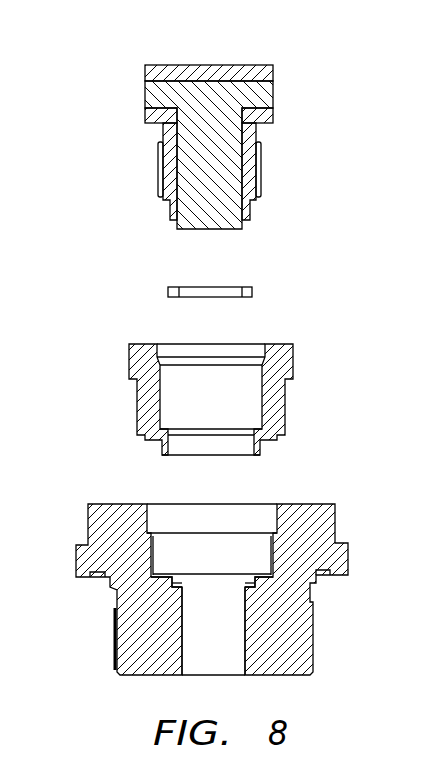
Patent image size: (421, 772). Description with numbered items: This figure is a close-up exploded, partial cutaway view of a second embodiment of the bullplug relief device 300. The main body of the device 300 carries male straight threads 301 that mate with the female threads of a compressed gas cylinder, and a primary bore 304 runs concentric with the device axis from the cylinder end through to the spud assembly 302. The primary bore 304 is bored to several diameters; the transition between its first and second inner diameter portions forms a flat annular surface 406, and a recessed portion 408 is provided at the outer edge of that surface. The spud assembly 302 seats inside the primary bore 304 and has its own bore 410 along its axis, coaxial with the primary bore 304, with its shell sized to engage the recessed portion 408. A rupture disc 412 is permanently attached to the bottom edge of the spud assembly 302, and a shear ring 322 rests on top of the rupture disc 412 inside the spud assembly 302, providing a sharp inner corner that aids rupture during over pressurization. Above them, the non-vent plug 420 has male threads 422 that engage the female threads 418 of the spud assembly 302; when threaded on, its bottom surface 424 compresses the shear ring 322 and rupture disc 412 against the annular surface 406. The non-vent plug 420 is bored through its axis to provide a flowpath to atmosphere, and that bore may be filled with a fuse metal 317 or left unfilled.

The bullplug relief device 300 is at (83, 491).
The male straight threads 301 is at (107, 648).
The spud assembly 302 is at (130, 365).
The primary bore 304 is at (232, 644).
The fuse metal 317 is at (145, 95).
The shear ring 322 is at (218, 286).
The flat annular surface 406 is at (180, 580).
The recessed portion 408 is at (180, 587).
The bore 410 is at (229, 408).
The rupture disc 412 is at (213, 456).
The female threads 418 is at (255, 387).
The non-vent plug 420 is at (307, 63).
The male threads 422 is at (262, 167).
The bottom surface 424 is at (190, 230).